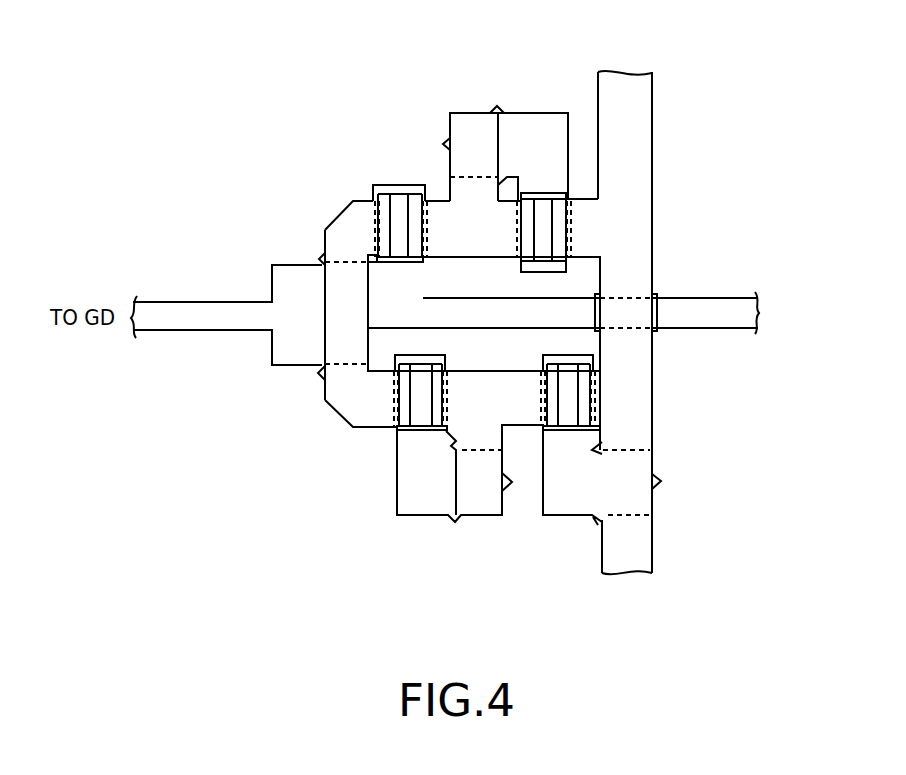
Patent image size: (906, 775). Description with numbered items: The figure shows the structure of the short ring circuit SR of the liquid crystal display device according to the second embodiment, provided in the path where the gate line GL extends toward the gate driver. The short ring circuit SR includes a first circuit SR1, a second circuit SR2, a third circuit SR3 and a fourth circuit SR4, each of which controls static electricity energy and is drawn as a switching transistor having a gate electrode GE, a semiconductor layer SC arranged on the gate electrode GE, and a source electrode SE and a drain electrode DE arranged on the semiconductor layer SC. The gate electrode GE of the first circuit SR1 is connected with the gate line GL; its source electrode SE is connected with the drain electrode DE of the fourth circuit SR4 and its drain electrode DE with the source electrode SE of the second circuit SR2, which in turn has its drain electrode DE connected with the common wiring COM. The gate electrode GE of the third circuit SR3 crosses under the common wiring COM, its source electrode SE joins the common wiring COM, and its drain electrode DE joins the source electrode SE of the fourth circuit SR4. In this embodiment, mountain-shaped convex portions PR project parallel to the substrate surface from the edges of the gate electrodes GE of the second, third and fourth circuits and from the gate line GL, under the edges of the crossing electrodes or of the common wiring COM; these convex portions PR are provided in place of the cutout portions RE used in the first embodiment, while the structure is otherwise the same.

The short ring circuit SR is at (408, 82).
The first circuit SR1 is at (359, 162).
The second circuit SR2 is at (576, 278).
The third circuit SR3 is at (606, 377).
The fourth circuit SR4 is at (389, 432).
The convex portion PR is at (497, 107).
The cutout portion RE is at (446, 144).
The gate electrode GE is at (408, 190).
The semiconductor layer SC is at (387, 185).
The source electrode SE is at (345, 202).
The drain electrode DE is at (568, 226).
The common wiring COM is at (652, 140).
The gate line GL is at (741, 310).